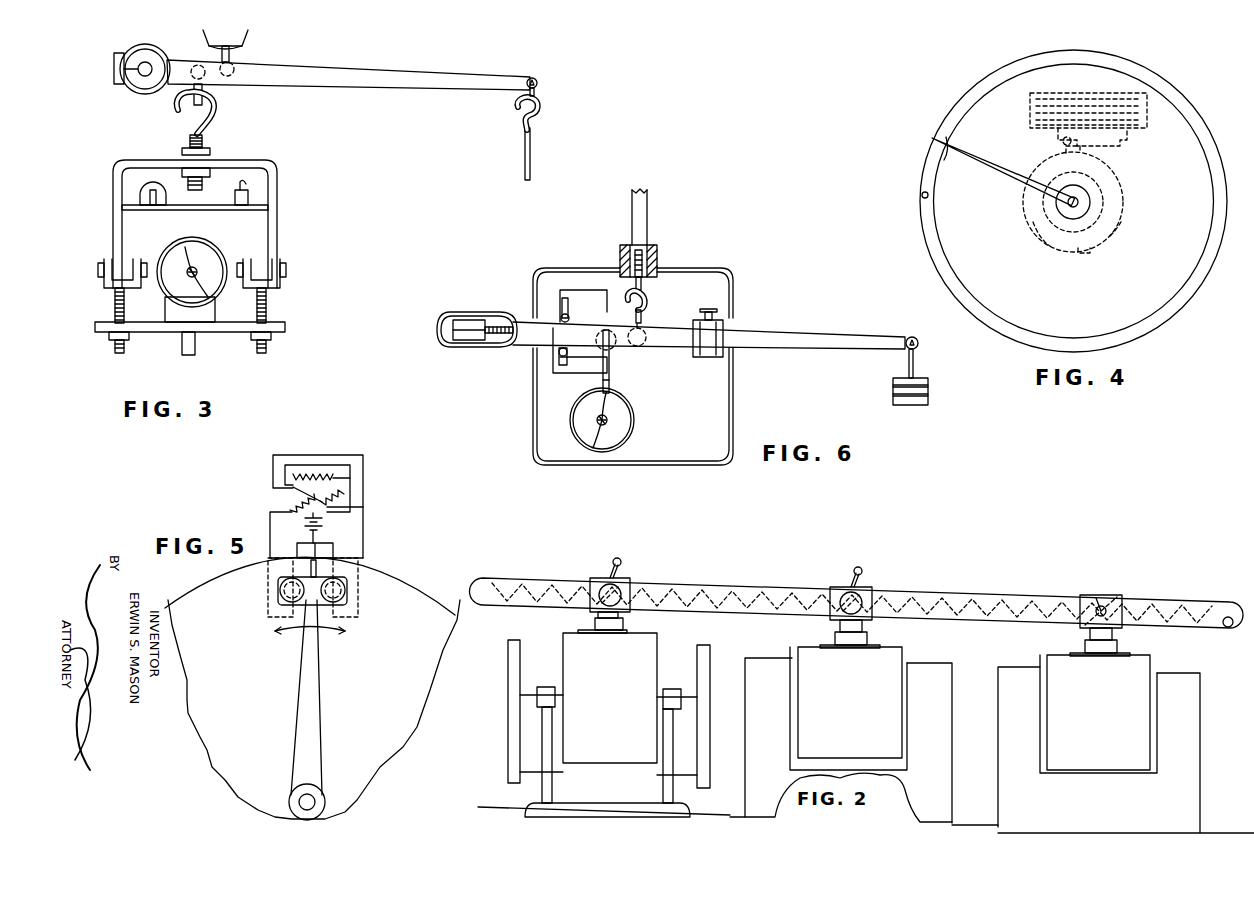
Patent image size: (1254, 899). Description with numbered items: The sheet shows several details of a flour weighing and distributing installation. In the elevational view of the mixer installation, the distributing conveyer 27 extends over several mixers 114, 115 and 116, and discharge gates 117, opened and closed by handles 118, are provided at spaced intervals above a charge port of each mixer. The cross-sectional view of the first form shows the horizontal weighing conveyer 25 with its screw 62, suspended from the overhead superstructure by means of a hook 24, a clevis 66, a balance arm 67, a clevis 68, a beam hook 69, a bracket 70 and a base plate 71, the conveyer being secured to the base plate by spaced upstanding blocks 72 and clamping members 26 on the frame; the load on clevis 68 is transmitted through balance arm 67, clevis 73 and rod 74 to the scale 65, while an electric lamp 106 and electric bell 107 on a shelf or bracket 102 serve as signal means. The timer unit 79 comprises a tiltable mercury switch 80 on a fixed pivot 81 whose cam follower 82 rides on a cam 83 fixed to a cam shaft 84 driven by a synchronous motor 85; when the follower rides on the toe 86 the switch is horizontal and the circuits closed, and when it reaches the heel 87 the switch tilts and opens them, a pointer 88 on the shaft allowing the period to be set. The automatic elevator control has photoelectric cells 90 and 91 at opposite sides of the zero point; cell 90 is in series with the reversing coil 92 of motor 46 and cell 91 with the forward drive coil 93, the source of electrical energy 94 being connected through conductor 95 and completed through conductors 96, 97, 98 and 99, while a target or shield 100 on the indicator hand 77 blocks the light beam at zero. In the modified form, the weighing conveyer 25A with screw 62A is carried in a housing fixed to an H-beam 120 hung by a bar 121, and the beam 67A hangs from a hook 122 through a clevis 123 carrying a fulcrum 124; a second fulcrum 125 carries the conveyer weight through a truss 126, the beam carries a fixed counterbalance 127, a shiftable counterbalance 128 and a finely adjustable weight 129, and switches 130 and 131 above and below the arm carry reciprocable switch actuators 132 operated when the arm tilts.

In FIG. 3, the hook 24 is at (205, 40).
In FIG. 3, the weighing conveyer 25 is at (222, 250).
In FIG. 6, the weighing conveyer 25A is at (620, 452).
In FIG. 3, the clamp 26 is at (104, 275).
In FIG. 2, the distributing conveyer 27 is at (1160, 602).
In FIG. 5, the motor 46 is at (316, 494).
In FIG. 3, the screw 62 is at (186, 250).
In FIG. 6, the screw 62A is at (594, 450).
In FIG. 5, the scale 65 is at (405, 580).
In FIG. 3, the clevis 66 is at (232, 50).
In FIG. 3, the balance arm 67 is at (186, 80).
In FIG. 6, the beam 67A is at (770, 332).
In FIG. 3, the clevis 68 is at (205, 93).
In FIG. 3, the beam hook 69 is at (216, 103).
In FIG. 3, the bracket 70 is at (277, 166).
In FIG. 3, the base plate 71 is at (230, 332).
In FIG. 3, the upstanding blocks 72 is at (215, 309).
In FIG. 3, the clevis 73 is at (540, 95).
In FIG. 3, the rod 74 is at (182, 345).
In FIG. 5, the indicator hand 77 is at (312, 678).
In FIG. 4, the timer unit 79 is at (1175, 122).
In FIG. 4, the mercury switch 80 is at (1147, 110).
In FIG. 4, the fixed pivot 81 is at (1127, 137).
In FIG. 4, the cam follower 82 is at (1047, 160).
In FIG. 4, the cam 83 is at (1035, 237).
In FIG. 4, the cam shaft 84 is at (1080, 202).
In FIG. 4, the synchronous motor 85 is at (1104, 181).
In FIG. 4, the toe 86 is at (1023, 215).
In FIG. 4, the heel 87 is at (1122, 220).
In FIG. 4, the pointer 88 is at (950, 160).
In FIG. 5, the photoelectric cell 90 is at (268, 590).
In FIG. 5, the photoelectric cell 91 is at (350, 580).
In FIG. 5, the reversing coil 92 is at (290, 508).
In FIG. 5, the forward drive coil 93 is at (342, 492).
In FIG. 5, the source of electrical energy 94 is at (325, 526).
In FIG. 5, the conductor 95 is at (352, 507).
In FIG. 5, the conductor 96 is at (270, 520).
In FIG. 5, the conductor 97 is at (297, 547).
In FIG. 5, the conductor 98 is at (333, 455).
In FIG. 5, the conductor 99 is at (333, 545).
In FIG. 5, the target or shield 100 is at (347, 598).
In FIG. 3, the shelf or bracket 102 is at (268, 210).
In FIG. 3, the electric lamp 106 is at (140, 197).
In FIG. 3, the electric bell 107 is at (250, 192).
In FIG. 2, the mixer 114 is at (1197, 713).
In FIG. 2, the mixer 115 is at (948, 715).
In FIG. 2, the mixer 116 is at (650, 690).
In FIG. 2, the discharge gate 117 is at (622, 584).
In FIG. 2, the handle 118 is at (619, 565).
In FIG. 6, the H-beam 120 is at (657, 262).
In FIG. 6, the bar 121 is at (648, 208).
In FIG. 6, the hook 122 is at (648, 296).
In FIG. 6, the clevis 123 is at (642, 318).
In FIG. 6, the fulcrum 124 is at (641, 346).
In FIG. 6, the second fulcrum 125 is at (609, 343).
In FIG. 6, the truss 126 is at (603, 384).
In FIG. 6, the fixed counterbalance 127 is at (893, 392).
In FIG. 6, the shiftable counterbalance 128 is at (712, 357).
In FIG. 6, the finely adjustable weight 129 is at (466, 341).
In FIG. 6, the electrical switch 130 is at (560, 293).
In FIG. 6, the electrical switch 131 is at (553, 373).
In FIG. 6, the switch actuator 132 is at (562, 318).